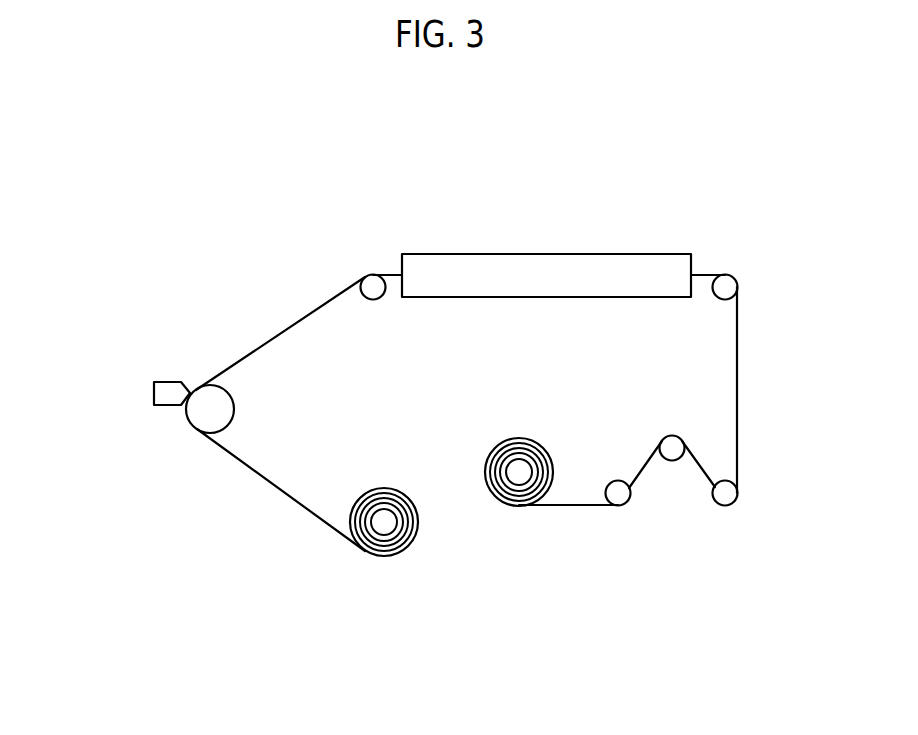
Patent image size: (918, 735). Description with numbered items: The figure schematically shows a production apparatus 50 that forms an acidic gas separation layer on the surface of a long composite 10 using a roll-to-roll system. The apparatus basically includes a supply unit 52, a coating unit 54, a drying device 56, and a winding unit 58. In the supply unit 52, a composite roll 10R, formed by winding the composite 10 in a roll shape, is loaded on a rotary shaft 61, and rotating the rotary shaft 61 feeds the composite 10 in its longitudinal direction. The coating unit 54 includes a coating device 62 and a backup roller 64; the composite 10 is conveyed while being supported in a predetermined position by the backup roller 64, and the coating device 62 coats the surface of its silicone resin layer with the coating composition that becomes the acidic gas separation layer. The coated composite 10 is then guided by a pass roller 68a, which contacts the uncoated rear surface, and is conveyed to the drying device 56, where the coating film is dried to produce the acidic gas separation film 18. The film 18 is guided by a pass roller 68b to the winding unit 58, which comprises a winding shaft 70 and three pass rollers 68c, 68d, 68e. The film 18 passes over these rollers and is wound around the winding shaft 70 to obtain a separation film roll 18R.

The composite 10 is at (293, 503).
The composite roll 10R is at (395, 557).
The acidic gas separation film 18 is at (740, 398).
The separation film roll 18R is at (525, 436).
The production apparatus 50 is at (655, 188).
The supply unit 52 is at (394, 462).
The coating unit 54 is at (162, 424).
The drying device 56 is at (550, 263).
The winding unit 58 is at (606, 531).
The rotary shaft 61 is at (384, 522).
The coating device 62 is at (170, 393).
The backup roller 64 is at (225, 410).
The pass roller 68a is at (372, 285).
The pass roller 68b is at (717, 297).
The pass roller 68c is at (726, 498).
The pass roller 68d is at (670, 450).
The pass roller 68e is at (622, 492).
The winding shaft 70 is at (519, 470).